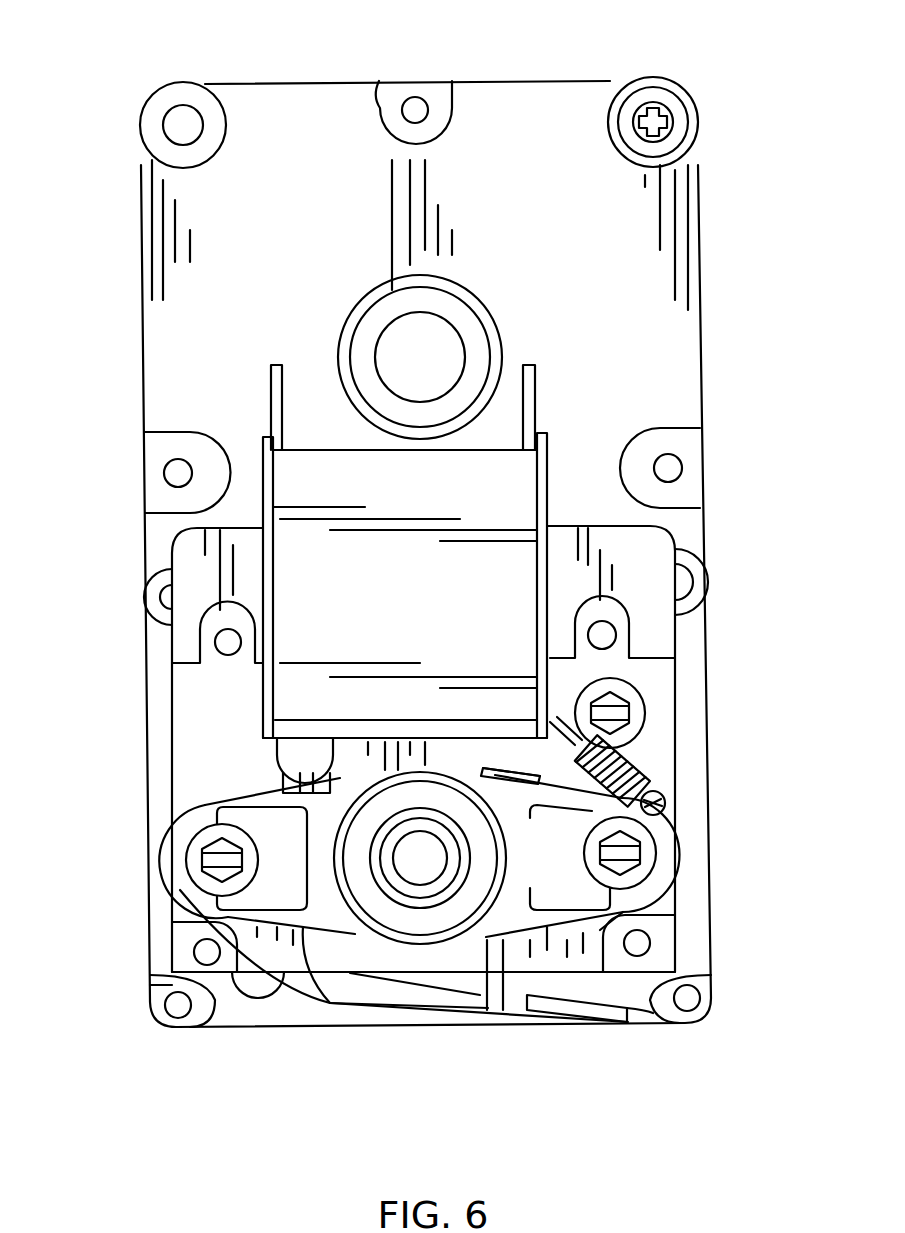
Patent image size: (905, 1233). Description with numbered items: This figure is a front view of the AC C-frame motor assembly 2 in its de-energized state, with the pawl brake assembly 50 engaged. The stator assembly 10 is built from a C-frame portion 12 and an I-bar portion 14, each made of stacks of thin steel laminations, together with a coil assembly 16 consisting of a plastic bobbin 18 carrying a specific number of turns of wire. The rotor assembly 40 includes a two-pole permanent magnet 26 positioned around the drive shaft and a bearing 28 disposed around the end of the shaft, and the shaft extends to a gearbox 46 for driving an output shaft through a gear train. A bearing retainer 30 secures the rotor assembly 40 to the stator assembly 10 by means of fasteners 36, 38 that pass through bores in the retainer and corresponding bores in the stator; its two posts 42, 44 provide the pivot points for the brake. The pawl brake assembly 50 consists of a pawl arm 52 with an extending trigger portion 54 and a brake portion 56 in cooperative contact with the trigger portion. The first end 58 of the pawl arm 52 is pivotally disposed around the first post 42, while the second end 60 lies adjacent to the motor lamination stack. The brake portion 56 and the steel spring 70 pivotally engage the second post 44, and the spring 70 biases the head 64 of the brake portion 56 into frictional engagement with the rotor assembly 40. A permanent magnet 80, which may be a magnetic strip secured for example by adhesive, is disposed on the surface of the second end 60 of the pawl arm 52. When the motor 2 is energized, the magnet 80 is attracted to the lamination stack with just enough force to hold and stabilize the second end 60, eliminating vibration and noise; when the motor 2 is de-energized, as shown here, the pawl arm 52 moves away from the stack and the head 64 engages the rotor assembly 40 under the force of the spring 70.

The AC C-frame motor assembly 2 is at (302, 80).
The stator assembly 10 is at (150, 665).
The C-frame portion 12 is at (200, 717).
The I-bar portion 14 is at (200, 562).
The coil assembly 16 is at (290, 522).
The bobbin 18 is at (262, 447).
The two-pole permanent magnet 26 is at (406, 871).
The bearing 28 is at (148, 968).
The bearing retainer 30 is at (367, 828).
The fastener 36 is at (195, 868).
The fastener 38 is at (657, 862).
The rotor assembly 40 is at (272, 818).
The first post 42 is at (183, 880).
The second post 44 is at (653, 898).
The gearbox 46 is at (160, 216).
The pawl brake assembly 50 is at (357, 1008).
The pawl arm 52 is at (282, 1005).
The extending trigger portion 54 is at (487, 1005).
The brake portion 56 is at (677, 812).
The first end 58 is at (195, 938).
The second end 60 is at (615, 1013).
The head 64 is at (512, 768).
The spring 70 is at (642, 790).
The permanent magnet 80 is at (653, 1013).